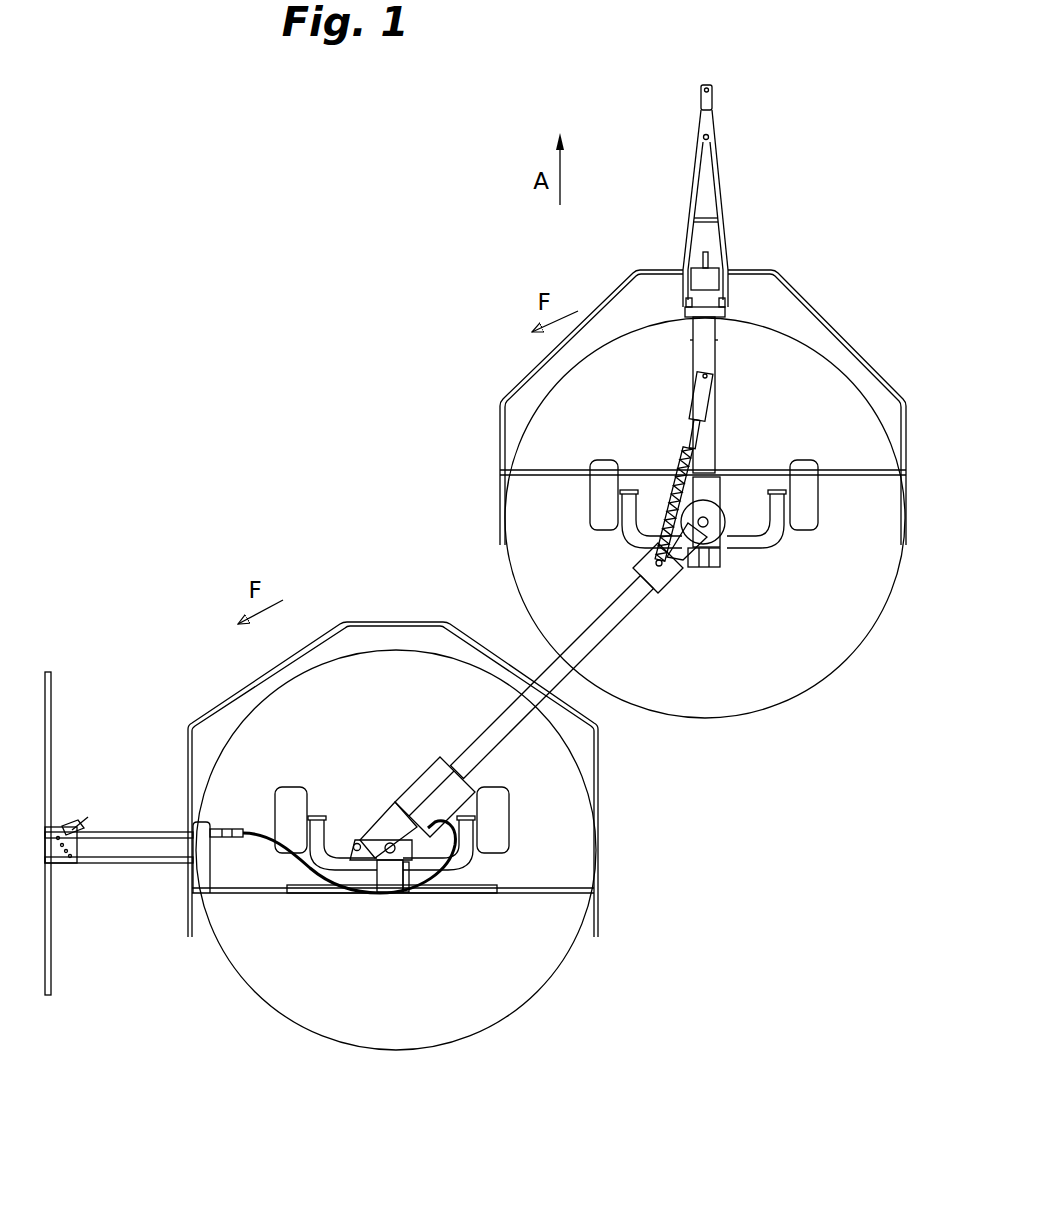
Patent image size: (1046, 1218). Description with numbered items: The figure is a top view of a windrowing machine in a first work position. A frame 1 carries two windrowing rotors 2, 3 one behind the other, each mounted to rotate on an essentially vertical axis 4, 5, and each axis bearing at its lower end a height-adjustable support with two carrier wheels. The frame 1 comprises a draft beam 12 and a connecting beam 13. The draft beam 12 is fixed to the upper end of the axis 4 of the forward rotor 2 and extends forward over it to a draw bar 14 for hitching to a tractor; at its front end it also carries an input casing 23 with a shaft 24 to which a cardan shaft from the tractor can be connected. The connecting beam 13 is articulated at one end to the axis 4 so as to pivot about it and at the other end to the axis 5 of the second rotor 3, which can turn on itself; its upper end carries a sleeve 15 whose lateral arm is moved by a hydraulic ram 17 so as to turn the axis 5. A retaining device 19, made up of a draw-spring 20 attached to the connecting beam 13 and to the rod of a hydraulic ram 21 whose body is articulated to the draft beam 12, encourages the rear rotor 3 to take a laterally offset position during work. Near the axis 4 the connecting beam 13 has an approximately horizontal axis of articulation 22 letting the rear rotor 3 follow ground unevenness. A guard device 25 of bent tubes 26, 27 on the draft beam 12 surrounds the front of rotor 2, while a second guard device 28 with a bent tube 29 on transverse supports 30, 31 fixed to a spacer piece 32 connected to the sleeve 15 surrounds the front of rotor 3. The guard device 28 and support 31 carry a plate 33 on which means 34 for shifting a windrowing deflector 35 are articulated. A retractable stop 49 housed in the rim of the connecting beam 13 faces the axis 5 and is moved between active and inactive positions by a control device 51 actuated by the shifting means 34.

The frame 1 is at (604, 653).
The windrowing rotor 2 is at (532, 415).
The windrowing rotor 3 is at (397, 647).
The vertical axis 4 is at (712, 527).
The vertical axis 5 is at (362, 863).
The draft beam 12 is at (712, 332).
The connecting beam 13 is at (578, 658).
The draw bar 14 is at (714, 152).
The sleeve 15 is at (368, 838).
The hydraulic ram 17 is at (415, 780).
The retaining device 19 is at (671, 458).
The draw-spring 20 is at (647, 513).
The hydraulic ram 21 is at (702, 398).
The axis of articulation 22 is at (678, 578).
The input casing 23 is at (708, 279).
The shaft 24 is at (708, 262).
The guard device 25 is at (715, 389).
The bent tube 26 is at (878, 373).
The bent tube 27 is at (621, 285).
The guard device 28 is at (432, 797).
The bent tube 29 is at (558, 811).
The transverse support 30 is at (545, 893).
The transverse support 31 is at (243, 893).
The spacer piece 32 is at (390, 877).
The plate 33 is at (200, 873).
The means for shifting 34 is at (97, 868).
The windrowing deflector 35 is at (53, 684).
The retractable stop 49 is at (400, 895).
The control device 51 is at (236, 822).